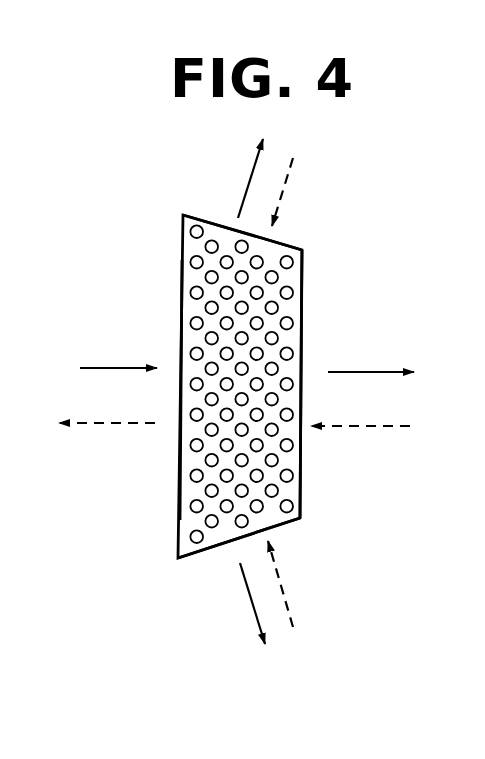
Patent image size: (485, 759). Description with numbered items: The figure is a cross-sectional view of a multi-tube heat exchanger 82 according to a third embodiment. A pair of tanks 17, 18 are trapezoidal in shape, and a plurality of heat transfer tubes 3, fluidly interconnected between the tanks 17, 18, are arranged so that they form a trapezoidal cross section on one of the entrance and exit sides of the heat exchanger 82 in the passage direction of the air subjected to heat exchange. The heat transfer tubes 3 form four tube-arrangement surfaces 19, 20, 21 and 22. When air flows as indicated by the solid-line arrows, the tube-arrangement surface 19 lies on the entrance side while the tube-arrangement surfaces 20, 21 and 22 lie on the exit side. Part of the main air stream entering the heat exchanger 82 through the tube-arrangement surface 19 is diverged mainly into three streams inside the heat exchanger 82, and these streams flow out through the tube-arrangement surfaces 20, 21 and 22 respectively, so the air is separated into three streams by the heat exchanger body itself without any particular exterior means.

The multi-tube heat exchanger 82 is at (286, 407).
The heat transfer tubes 3 is at (178, 555).
The tank 17 is at (302, 250).
The tank 18 is at (332, 314).
The tube-arrangement surface 19 is at (174, 310).
The tube-arrangement surface 20 is at (218, 219).
The tube-arrangement surface 21 is at (306, 481).
The tube-arrangement surface 22 is at (222, 549).